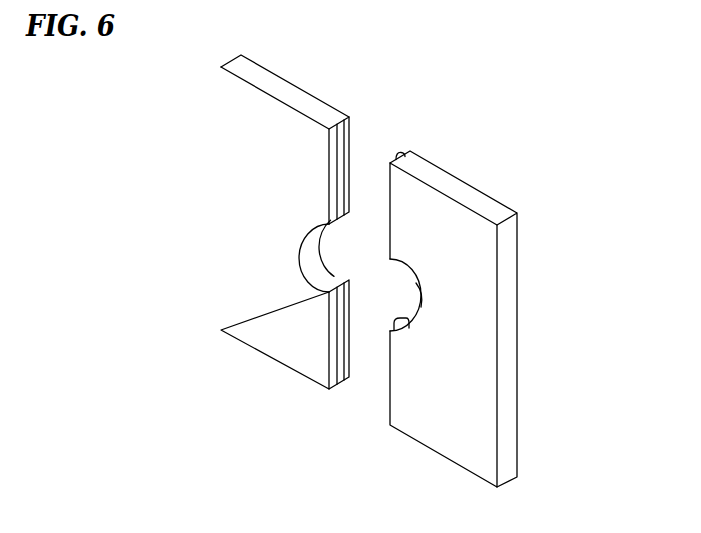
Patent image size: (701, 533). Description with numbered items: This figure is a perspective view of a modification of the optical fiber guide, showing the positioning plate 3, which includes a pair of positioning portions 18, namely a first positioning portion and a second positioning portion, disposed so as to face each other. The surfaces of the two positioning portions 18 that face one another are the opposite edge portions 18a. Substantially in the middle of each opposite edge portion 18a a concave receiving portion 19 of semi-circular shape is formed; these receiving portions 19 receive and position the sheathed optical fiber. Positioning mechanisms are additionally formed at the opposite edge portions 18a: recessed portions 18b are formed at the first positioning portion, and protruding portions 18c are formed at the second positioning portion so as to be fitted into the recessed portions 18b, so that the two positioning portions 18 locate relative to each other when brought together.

The positioning portion 18 is at (265, 78).
The opposite edge portion 18a is at (345, 142).
The recessed portion 18b is at (340, 162).
The protruding portion 18c is at (398, 152).
The concave receiving portion 19 is at (318, 272).
The positioning plate 3 is at (553, 449).